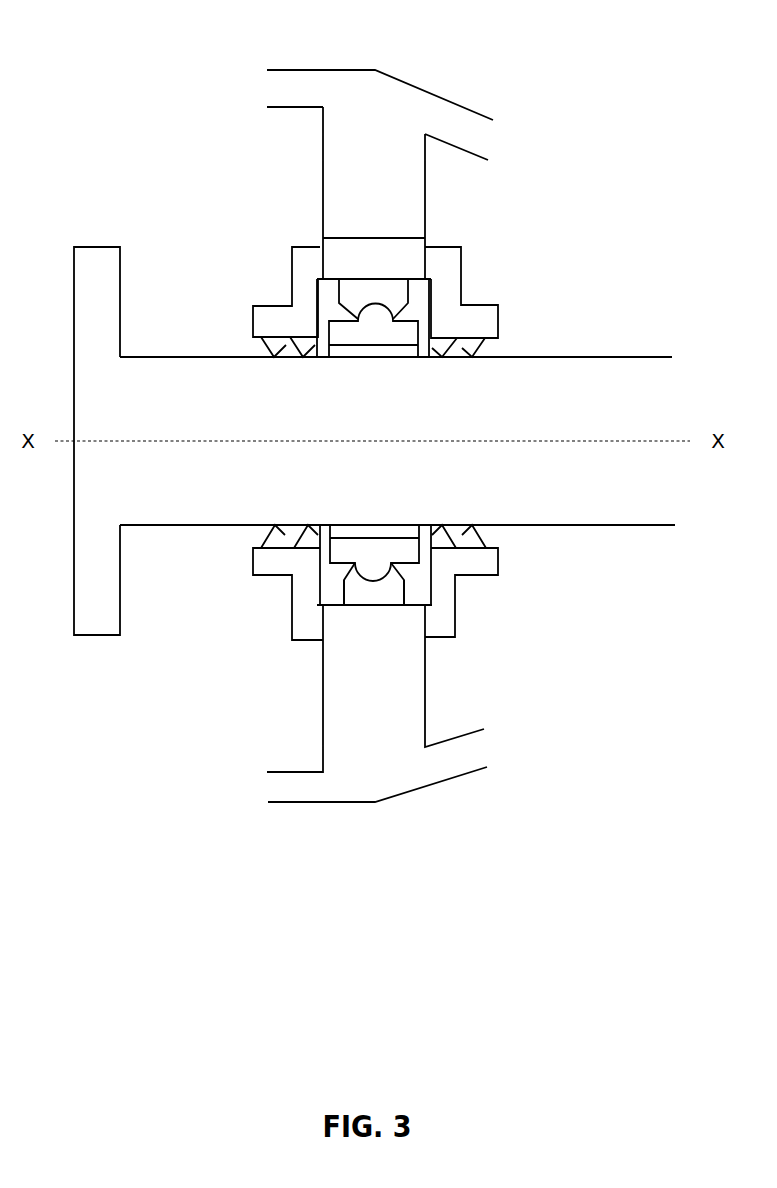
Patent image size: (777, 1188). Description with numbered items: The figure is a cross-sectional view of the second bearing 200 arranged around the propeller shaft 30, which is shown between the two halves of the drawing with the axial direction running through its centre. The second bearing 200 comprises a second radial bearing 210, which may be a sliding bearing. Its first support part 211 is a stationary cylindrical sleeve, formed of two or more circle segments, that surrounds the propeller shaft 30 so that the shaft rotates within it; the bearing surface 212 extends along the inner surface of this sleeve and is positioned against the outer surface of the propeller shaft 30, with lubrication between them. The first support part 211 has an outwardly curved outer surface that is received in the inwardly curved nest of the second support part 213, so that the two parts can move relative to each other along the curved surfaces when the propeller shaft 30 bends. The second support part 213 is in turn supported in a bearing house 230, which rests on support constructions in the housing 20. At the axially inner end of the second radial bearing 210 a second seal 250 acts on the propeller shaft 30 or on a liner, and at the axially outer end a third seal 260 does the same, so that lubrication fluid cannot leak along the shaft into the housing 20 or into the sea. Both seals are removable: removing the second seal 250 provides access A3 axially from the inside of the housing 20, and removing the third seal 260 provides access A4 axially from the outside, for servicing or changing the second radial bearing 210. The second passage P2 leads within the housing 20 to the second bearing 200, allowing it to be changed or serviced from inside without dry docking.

The housing 20 is at (327, 77).
The propeller shaft 30 is at (639, 525).
The second bearing 200 is at (567, 142).
The second radial bearing 210 is at (373, 223).
The first support part 211 is at (378, 557).
The bearing surface 212 is at (385, 533).
The second support part 213 is at (387, 593).
The bearing house 230 is at (343, 250).
The second seal 250 is at (303, 282).
The third seal 260 is at (448, 280).
The second passage P2 is at (195, 173).
The access from the inside of the housing A3 is at (257, 290).
The access from the outside of the housing A4 is at (507, 288).